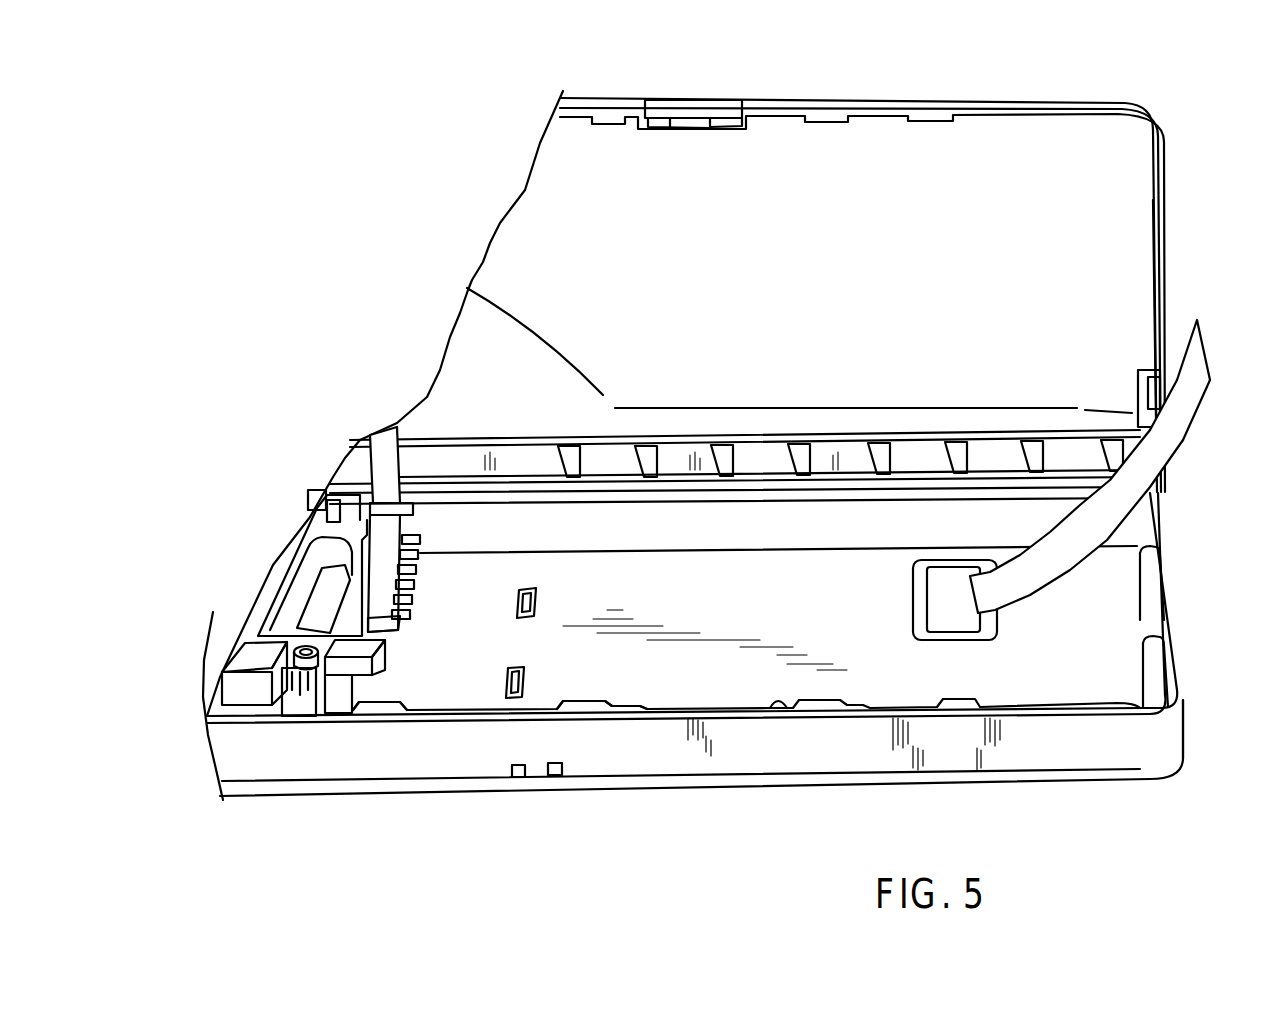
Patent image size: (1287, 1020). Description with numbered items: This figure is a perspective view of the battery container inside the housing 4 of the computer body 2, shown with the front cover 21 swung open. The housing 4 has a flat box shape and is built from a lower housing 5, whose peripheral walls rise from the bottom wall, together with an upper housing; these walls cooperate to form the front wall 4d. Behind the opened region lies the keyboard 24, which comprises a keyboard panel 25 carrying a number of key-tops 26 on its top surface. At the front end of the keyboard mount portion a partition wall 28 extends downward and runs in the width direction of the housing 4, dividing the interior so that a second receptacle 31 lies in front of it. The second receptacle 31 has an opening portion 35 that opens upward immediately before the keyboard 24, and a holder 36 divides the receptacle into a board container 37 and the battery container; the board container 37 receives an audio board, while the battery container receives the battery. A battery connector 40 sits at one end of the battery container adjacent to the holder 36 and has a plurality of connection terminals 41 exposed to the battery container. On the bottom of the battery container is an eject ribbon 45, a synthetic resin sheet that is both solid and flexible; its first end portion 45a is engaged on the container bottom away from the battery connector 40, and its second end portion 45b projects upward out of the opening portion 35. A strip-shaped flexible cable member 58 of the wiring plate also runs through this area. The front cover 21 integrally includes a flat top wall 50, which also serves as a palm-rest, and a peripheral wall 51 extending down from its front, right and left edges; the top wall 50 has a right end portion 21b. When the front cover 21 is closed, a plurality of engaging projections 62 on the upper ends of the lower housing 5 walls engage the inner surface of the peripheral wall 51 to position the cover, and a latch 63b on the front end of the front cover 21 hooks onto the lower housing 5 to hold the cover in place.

The computer body 2 is at (1212, 714).
The housing 4 is at (257, 765).
The front wall 4d is at (585, 757).
The lower housing 5 is at (1087, 747).
The front cover 21 is at (1033, 123).
The right end portion 21b is at (1138, 178).
The keyboard 24 is at (929, 450).
The keyboard panel 25 is at (765, 487).
The key-tops 26 is at (672, 455).
The partition wall 28 is at (742, 540).
The second receptacle 31 is at (240, 712).
The opening portion 35 is at (790, 700).
The holder 36 is at (305, 613).
The board container 37 is at (262, 595).
The battery connector 40 is at (387, 628).
The connection terminals 41 is at (412, 607).
The eject ribbon 45 is at (1070, 550).
The first end portion 45a is at (973, 600).
The second end portion 45b is at (1188, 375).
The top wall 50 is at (1018, 248).
The peripheral wall 51 is at (803, 98).
The cable member 58 is at (382, 443).
The engaging projections 62 is at (1167, 637).
The latch 63b is at (692, 108).